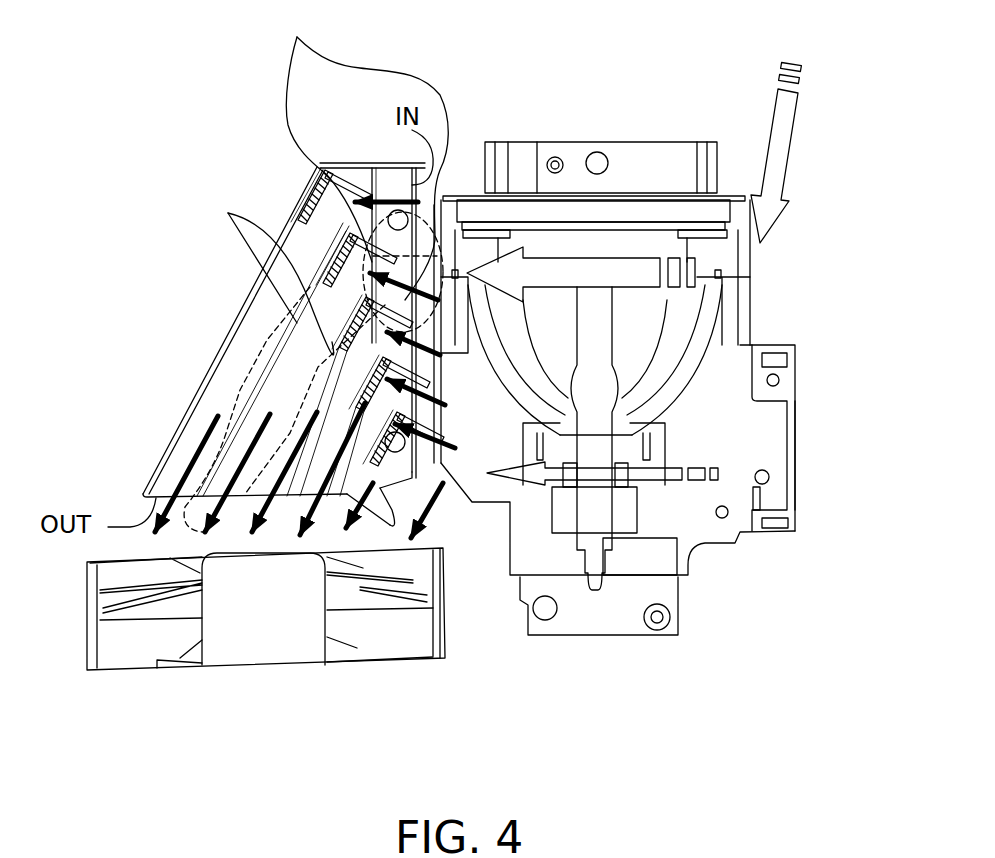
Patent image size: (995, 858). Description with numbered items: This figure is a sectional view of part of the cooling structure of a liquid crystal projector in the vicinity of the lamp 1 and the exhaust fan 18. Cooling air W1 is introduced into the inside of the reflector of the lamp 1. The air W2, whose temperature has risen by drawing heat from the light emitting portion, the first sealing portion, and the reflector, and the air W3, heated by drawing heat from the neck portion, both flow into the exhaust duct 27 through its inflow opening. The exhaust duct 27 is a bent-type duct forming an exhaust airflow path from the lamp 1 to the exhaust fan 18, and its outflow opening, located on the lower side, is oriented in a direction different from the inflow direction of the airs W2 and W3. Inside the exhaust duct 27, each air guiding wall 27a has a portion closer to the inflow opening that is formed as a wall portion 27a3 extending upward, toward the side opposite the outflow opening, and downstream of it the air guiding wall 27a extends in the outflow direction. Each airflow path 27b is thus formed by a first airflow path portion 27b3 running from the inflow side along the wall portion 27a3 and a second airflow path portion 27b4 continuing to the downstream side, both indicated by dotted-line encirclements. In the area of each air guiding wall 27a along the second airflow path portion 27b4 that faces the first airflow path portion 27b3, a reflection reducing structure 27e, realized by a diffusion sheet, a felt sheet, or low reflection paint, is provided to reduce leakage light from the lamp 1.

The lamp 1 is at (673, 373).
The exhaust fan 18 is at (282, 628).
The exhaust duct 27 is at (237, 334).
The air guiding wall 27a is at (262, 273).
The wall portion 27a3 is at (356, 151).
The airflow path 27b is at (278, 397).
The first airflow path portion 27b3 is at (413, 265).
The second airflow path portion 27b4 is at (247, 441).
The reflection reducing structure 27e is at (325, 277).
The cooling air W1 is at (806, 152).
The air W2 is at (603, 283).
The air W3 is at (623, 480).